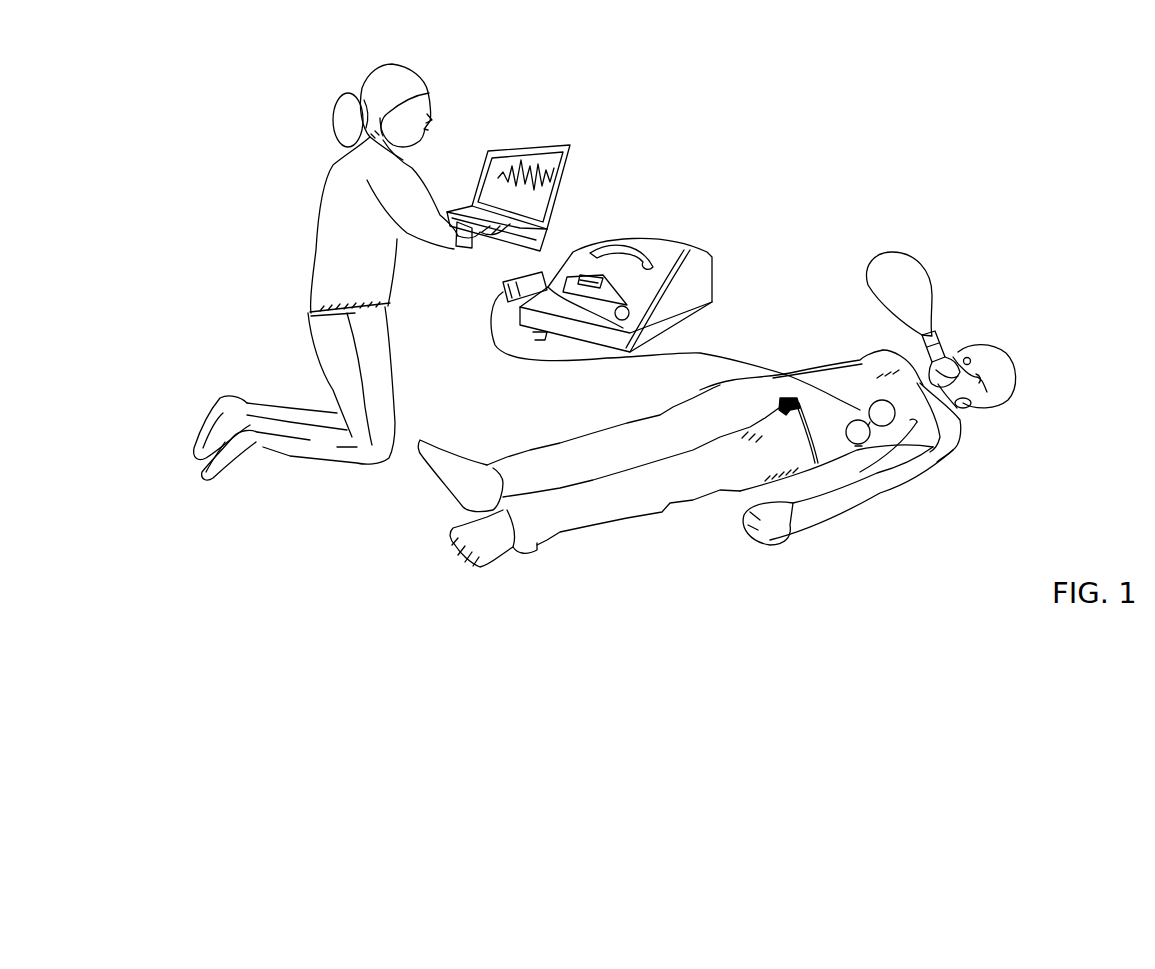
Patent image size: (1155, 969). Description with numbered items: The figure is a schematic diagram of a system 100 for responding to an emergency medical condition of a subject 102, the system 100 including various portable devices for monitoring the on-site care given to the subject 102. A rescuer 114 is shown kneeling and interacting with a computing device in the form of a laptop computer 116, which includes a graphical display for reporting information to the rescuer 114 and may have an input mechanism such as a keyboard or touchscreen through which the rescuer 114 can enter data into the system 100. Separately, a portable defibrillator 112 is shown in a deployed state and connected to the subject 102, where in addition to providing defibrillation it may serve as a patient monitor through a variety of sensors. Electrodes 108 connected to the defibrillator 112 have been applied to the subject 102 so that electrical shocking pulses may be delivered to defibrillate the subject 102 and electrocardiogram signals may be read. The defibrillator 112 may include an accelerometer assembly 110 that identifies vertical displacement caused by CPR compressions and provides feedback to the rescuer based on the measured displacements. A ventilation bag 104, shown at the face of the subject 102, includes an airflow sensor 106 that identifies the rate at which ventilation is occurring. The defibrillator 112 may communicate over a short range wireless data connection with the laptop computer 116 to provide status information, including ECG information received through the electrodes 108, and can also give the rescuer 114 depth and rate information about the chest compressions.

The system 100 is at (150, 237).
The subject 102 is at (1020, 383).
The ventilation bag 104 is at (908, 260).
The airflow sensor 106 is at (947, 337).
The electrodes 108 is at (860, 450).
The accelerometer assembly 110 is at (917, 425).
The portable defibrillator 112 is at (657, 241).
The rescuer 114 is at (317, 238).
The laptop computer 116 is at (552, 143).